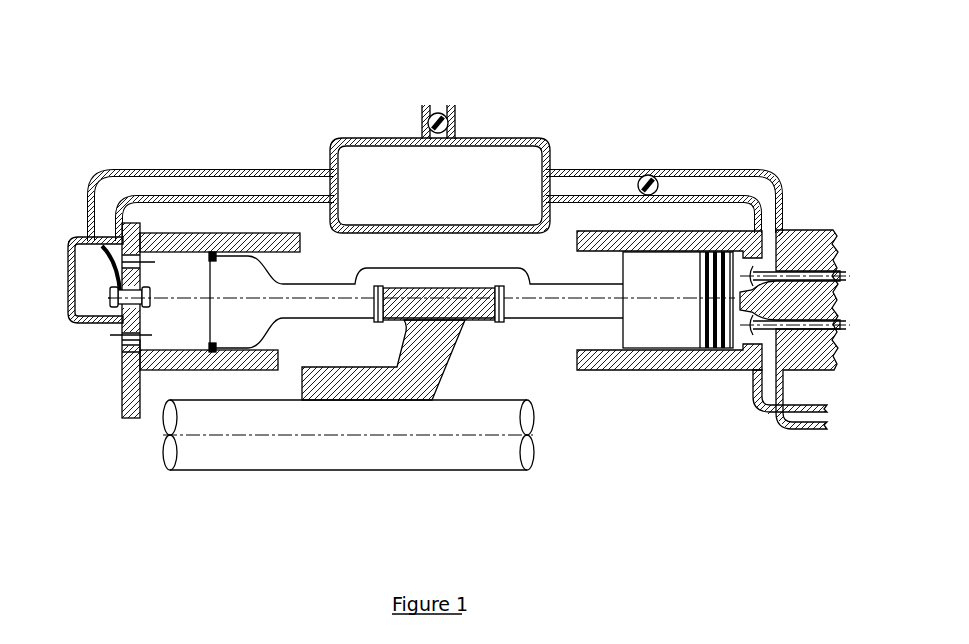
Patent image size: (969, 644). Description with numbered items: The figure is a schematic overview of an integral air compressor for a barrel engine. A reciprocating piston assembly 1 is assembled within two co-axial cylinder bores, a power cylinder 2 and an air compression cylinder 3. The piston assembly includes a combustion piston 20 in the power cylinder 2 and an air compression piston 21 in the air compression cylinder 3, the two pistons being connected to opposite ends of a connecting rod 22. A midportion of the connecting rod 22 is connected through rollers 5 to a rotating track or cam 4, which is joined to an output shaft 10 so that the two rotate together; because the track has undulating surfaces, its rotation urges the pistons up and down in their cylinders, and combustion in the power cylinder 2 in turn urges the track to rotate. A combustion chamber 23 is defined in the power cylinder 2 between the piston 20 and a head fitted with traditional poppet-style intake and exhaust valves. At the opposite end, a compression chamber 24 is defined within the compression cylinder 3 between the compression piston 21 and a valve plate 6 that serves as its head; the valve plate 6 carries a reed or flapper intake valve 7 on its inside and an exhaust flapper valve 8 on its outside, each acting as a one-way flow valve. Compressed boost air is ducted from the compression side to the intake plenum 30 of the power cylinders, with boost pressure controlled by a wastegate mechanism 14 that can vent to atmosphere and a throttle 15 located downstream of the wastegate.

The reciprocating piston assembly 1 is at (516, 269).
The power cylinder 2 is at (640, 252).
The air compression cylinder 3 is at (244, 240).
The rotating track or cam 4 is at (444, 358).
The rollers 5 is at (497, 287).
The valve plate 6 is at (142, 228).
The intake flapper valve 7 is at (141, 343).
The exhaust flapper valve 8 is at (117, 252).
The output shaft 10 is at (505, 399).
The wastegate mechanism 14 is at (443, 113).
The throttle 15 is at (641, 176).
The combustion piston 20 is at (668, 338).
The air compression piston 21 is at (246, 334).
The connecting rod 22 is at (320, 288).
The combustion chamber 23 is at (733, 283).
The compression chamber 24 is at (198, 334).
The intake plenum 30 is at (752, 186).